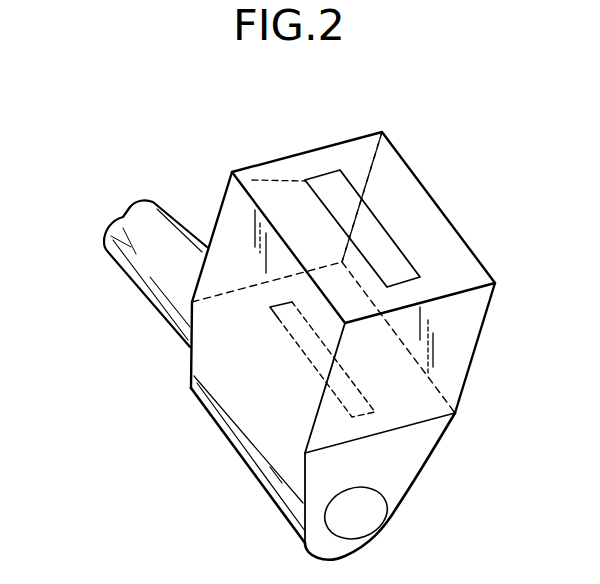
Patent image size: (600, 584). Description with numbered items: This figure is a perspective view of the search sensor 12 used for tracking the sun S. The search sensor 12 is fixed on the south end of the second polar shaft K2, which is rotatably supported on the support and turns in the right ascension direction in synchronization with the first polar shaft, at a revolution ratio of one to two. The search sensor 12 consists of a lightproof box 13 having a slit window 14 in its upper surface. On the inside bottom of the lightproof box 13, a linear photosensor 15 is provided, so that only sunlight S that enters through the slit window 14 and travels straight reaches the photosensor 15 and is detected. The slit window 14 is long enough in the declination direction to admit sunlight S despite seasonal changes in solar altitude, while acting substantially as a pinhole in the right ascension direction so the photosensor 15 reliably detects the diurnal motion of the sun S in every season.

The search sensor 12 is at (252, 142).
The lightproof box 13 is at (447, 362).
The slit window 14 is at (402, 247).
The linear photosensor 15 is at (294, 340).
The sun / sunlight S is at (370, 233).
The second polar shaft K2 is at (130, 258).